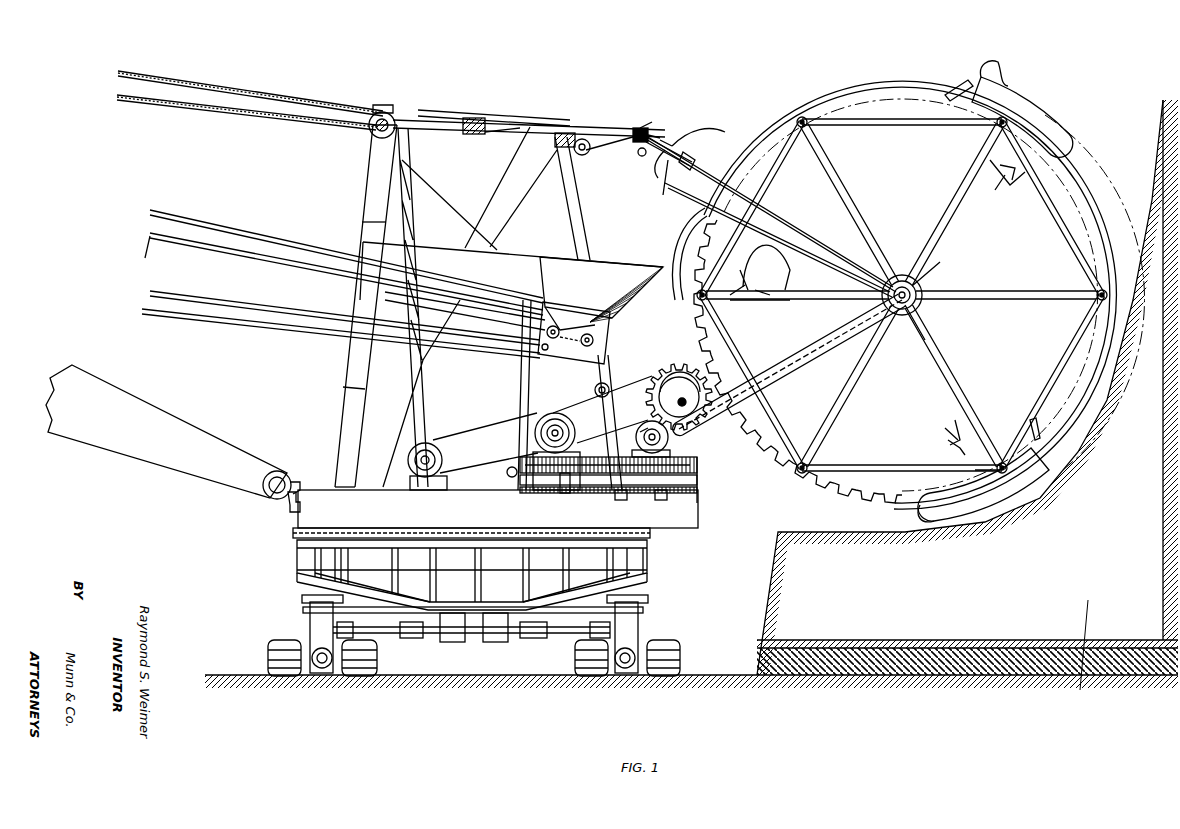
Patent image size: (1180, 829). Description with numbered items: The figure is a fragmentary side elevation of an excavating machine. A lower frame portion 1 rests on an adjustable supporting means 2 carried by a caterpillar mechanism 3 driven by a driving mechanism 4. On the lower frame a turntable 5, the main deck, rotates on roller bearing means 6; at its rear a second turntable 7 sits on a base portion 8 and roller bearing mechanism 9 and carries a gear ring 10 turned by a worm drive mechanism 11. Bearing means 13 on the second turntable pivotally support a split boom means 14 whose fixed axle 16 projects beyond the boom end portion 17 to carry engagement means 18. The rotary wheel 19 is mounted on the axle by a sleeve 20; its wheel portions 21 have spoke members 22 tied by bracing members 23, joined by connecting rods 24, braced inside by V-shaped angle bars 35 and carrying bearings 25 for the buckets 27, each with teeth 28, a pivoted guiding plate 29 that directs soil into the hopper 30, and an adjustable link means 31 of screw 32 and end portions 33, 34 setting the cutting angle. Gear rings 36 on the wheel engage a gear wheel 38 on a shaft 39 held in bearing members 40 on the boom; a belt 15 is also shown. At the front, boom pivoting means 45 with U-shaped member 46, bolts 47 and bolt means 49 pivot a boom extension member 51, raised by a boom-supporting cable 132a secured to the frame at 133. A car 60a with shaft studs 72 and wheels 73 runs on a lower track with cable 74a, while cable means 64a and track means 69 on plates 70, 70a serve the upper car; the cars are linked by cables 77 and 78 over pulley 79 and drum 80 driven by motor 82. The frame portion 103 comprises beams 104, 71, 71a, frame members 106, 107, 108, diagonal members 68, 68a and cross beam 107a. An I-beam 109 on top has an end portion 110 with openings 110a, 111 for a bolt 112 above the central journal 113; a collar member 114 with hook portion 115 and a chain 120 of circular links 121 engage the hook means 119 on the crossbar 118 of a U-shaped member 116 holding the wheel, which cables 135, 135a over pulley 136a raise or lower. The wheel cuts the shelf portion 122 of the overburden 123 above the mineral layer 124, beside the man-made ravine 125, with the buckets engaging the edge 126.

The lower frame portion 1 is at (290, 569).
The adjustable supporting means 2 is at (298, 629).
The caterpillar mechanism 3 is at (692, 654).
The driving mechanism 4 is at (489, 647).
The turntable 5 is at (310, 518).
The roller bearing means 6 is at (300, 536).
The second turntable 7 is at (699, 465).
The base portion 8 is at (699, 480).
The roller bearing mechanism 9 is at (699, 491).
The gear ring 10 is at (607, 462).
The worm drive mechanism 11 is at (507, 472).
The bearing means 13 is at (668, 440).
The split boom means 14 is at (795, 357).
The belt 15 is at (909, 367).
The fixed axle 16 is at (893, 304).
The split boom end portion 17 is at (826, 340).
The engagement means 18 is at (922, 296).
The rotary wheel 19 is at (890, 106).
The sleeve 20 is at (902, 280).
The wheel portion 21 is at (1090, 212).
The spoke members 22 is at (862, 385).
The bracing members 23 is at (886, 466).
The connecting rods 24 is at (801, 474).
The bearings 25 is at (1002, 478).
The buckets 27 is at (968, 505).
The teeth or cutters 28 is at (672, 348).
The guiding plate 29 is at (1032, 428).
The hopper 30 is at (600, 272).
The adjustable link means 31 is at (748, 282).
The right and left screw 32 is at (952, 425).
The threaded end portion 33 is at (955, 418).
The threaded end portion 34 is at (948, 444).
The V-shaped angle bars 35 is at (908, 338).
The gear rings 36 is at (842, 492).
The gear wheel 38 is at (702, 392).
The shaft 39 is at (682, 406).
The bearing members 40 is at (688, 404).
The boom pivoting means 45 is at (283, 468).
The U-shaped member 46 is at (312, 502).
The bolts 47 is at (299, 480).
The bolt means 49 is at (263, 483).
The boom extension member 51 is at (140, 440).
The car 60a is at (612, 350).
The cable means 64a is at (178, 212).
The frame member 68 is at (448, 228).
The frame member 68a is at (427, 372).
The track means 69 is at (515, 310).
The plate 70 is at (515, 330).
The plate 70a is at (352, 281).
The frame member 71 is at (365, 193).
The frame member 71a is at (365, 228).
The shaft studs 72 is at (574, 333).
The wheels 73 is at (589, 333).
The cable 74a is at (198, 252).
The cable 77 is at (195, 292).
The cable 78 is at (618, 345).
The pulley 79 is at (610, 389).
The drum 80 is at (420, 446).
The motor 82 is at (407, 462).
The frame portion 103 is at (330, 395).
The beam 104 is at (345, 416).
The frame member 106 is at (620, 500).
The frame member 107 is at (586, 213).
The cross beam 107a is at (483, 137).
The frame member 108 is at (660, 500).
The I-beam 109 is at (543, 123).
The end portion 110 is at (638, 128).
The opening 110a is at (640, 158).
The opening 111 is at (652, 136).
The bolt 112 is at (660, 118).
The central journal 113 is at (568, 494).
The collar member 114 is at (612, 152).
The hook portion 115 is at (675, 143).
The U-shaped member 116 is at (775, 200).
The crossbar 118 is at (695, 158).
The hook means 119 is at (668, 186).
The chain 120 is at (706, 135).
The circular links 121 is at (665, 171).
The shelf portion 122 is at (1105, 420).
The overburden 123 is at (1070, 657).
The layer or vein of mineral 124 is at (866, 652).
The man-made ravine 125 is at (707, 676).
The edge of the overburden 126 is at (913, 533).
The boom-supporting cable 132a is at (210, 78).
The cable securing point 133 is at (370, 135).
The cable 135 is at (685, 222).
The cable 135a is at (560, 395).
The pulley 136a is at (583, 155).